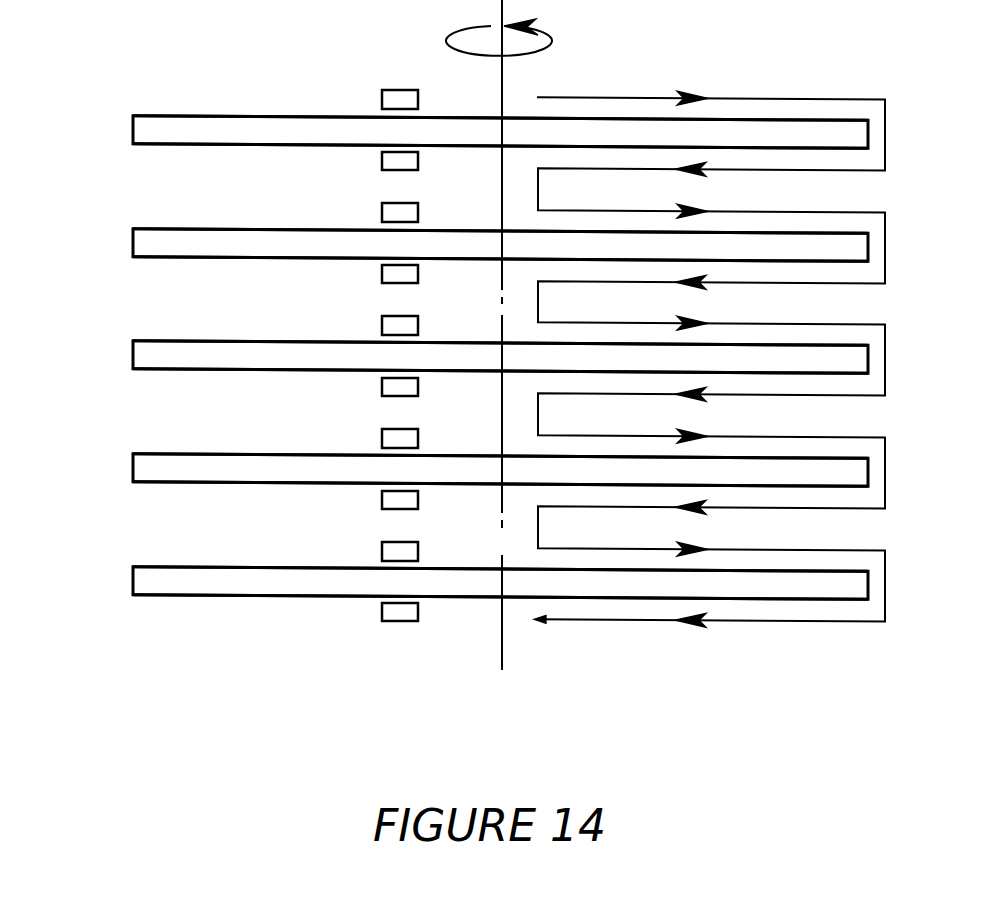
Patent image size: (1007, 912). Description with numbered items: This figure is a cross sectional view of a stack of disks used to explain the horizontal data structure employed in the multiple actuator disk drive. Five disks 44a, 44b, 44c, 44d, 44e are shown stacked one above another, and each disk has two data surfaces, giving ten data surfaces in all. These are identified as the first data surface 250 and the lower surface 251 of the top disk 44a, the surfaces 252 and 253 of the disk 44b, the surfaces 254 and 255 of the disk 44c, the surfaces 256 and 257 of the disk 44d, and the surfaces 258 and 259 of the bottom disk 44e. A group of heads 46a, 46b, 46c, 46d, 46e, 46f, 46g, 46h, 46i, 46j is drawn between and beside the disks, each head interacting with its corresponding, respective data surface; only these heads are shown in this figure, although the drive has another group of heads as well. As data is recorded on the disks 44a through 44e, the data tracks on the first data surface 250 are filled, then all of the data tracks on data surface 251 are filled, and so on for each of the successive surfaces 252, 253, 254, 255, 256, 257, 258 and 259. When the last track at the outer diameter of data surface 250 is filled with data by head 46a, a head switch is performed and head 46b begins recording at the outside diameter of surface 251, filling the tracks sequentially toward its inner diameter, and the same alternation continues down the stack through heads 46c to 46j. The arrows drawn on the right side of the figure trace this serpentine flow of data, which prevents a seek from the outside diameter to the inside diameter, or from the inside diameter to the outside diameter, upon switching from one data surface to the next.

The disk 44a is at (133, 129).
The disk 44b is at (133, 242).
The disk 44c is at (133, 354).
The disk 44d is at (133, 467).
The disk 44e is at (133, 580).
The first data surface 250 is at (232, 115).
The data surface 251 is at (235, 143).
The data surface 252 is at (232, 228).
The data surface 253 is at (235, 256).
The data surface 254 is at (232, 340).
The data surface 255 is at (235, 368).
The data surface 256 is at (232, 453).
The data surface 257 is at (235, 481).
The data surface 258 is at (232, 566).
The data surface 259 is at (235, 594).
The head 46a is at (392, 101).
The head 46b is at (407, 159).
The head 46c is at (392, 214).
The head 46d is at (407, 272).
The head 46e is at (392, 327).
The head 46f is at (407, 385).
The head 46g is at (392, 440).
The head 46h is at (407, 498).
The head 46i is at (392, 553).
The head 46j is at (388, 610).